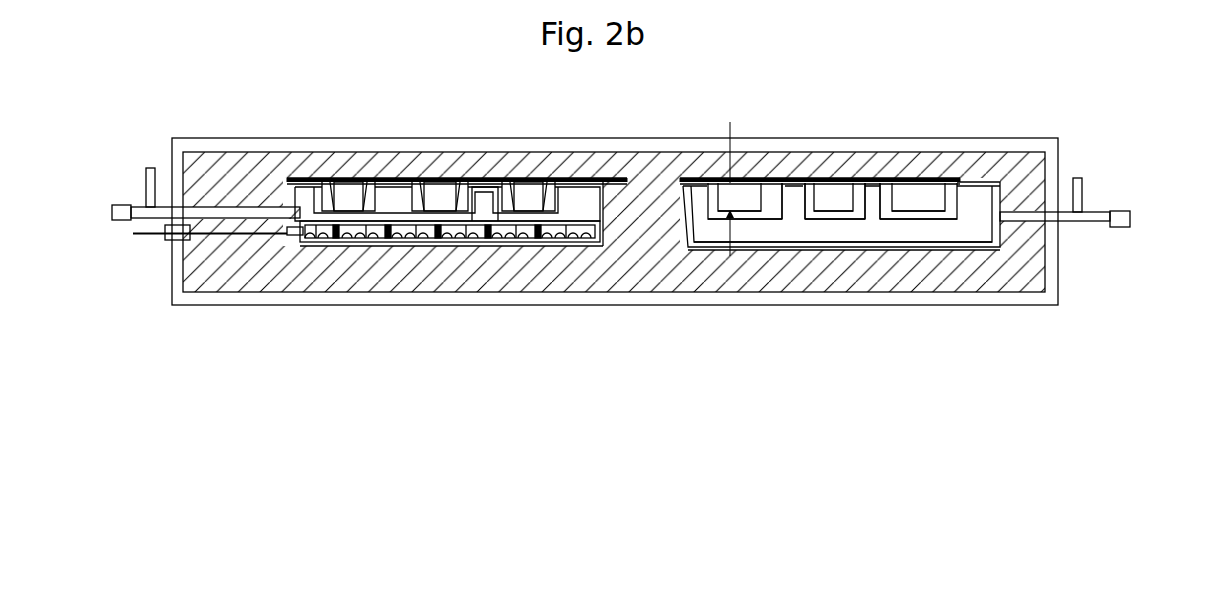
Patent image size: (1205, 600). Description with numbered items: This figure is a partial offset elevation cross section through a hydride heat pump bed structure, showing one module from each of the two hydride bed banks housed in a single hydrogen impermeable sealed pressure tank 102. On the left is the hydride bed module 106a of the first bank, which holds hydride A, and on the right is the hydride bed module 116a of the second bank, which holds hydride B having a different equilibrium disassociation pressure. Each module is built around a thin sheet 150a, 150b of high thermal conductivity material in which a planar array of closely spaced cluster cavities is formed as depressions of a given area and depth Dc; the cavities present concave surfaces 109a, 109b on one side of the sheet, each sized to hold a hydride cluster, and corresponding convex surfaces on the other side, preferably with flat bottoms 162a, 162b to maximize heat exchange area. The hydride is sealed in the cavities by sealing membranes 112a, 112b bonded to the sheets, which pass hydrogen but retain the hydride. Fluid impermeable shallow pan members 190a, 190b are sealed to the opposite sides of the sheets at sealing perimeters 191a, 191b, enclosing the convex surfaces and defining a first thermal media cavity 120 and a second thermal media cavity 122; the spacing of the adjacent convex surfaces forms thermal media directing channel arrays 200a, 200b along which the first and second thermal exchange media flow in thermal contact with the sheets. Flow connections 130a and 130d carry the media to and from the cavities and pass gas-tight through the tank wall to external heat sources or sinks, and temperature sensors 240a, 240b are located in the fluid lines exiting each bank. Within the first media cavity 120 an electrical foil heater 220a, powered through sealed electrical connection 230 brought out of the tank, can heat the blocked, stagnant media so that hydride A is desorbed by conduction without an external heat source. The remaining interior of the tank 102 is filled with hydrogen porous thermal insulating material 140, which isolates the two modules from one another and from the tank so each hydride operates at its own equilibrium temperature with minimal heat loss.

The hydrogen impermeable sealed pressure tank 102 is at (453, 302).
The thermal insulating material 140 is at (623, 268).
The thermal exchange media flow connection 130a is at (112, 207).
The thermal exchange media flow connection 130d is at (1130, 210).
The temperature sensor 240a is at (152, 168).
The temperature sensor 240b is at (1083, 178).
The electrical connection 230 is at (150, 236).
The hydride bed module 106a is at (300, 236).
The sealing perimeter 191a is at (287, 181).
The sealing perimeter 191b is at (683, 182).
The thin sheet 150a is at (305, 181).
The thin sheet 150b is at (698, 178).
The concave surface 109a is at (328, 180).
The concave surface 109b is at (743, 180).
The sealing membrane 112a is at (540, 178).
The sealing membrane 112b is at (967, 182).
The thermal media directing channel array 200a is at (565, 236).
The thermal media directing channel array 200b is at (965, 230).
The first thermal media cavity 120 is at (392, 239).
The flat bottom 162a is at (360, 232).
The flat bottom 162b is at (850, 222).
The electrical foil heater 220a is at (405, 240).
The shallow pan member 190a is at (332, 247).
The shallow pan member 190b is at (722, 252).
The second thermal media cavity 122 is at (792, 238).
The hydride bed module 116a is at (905, 215).
The cavity depth Dc is at (734, 189).